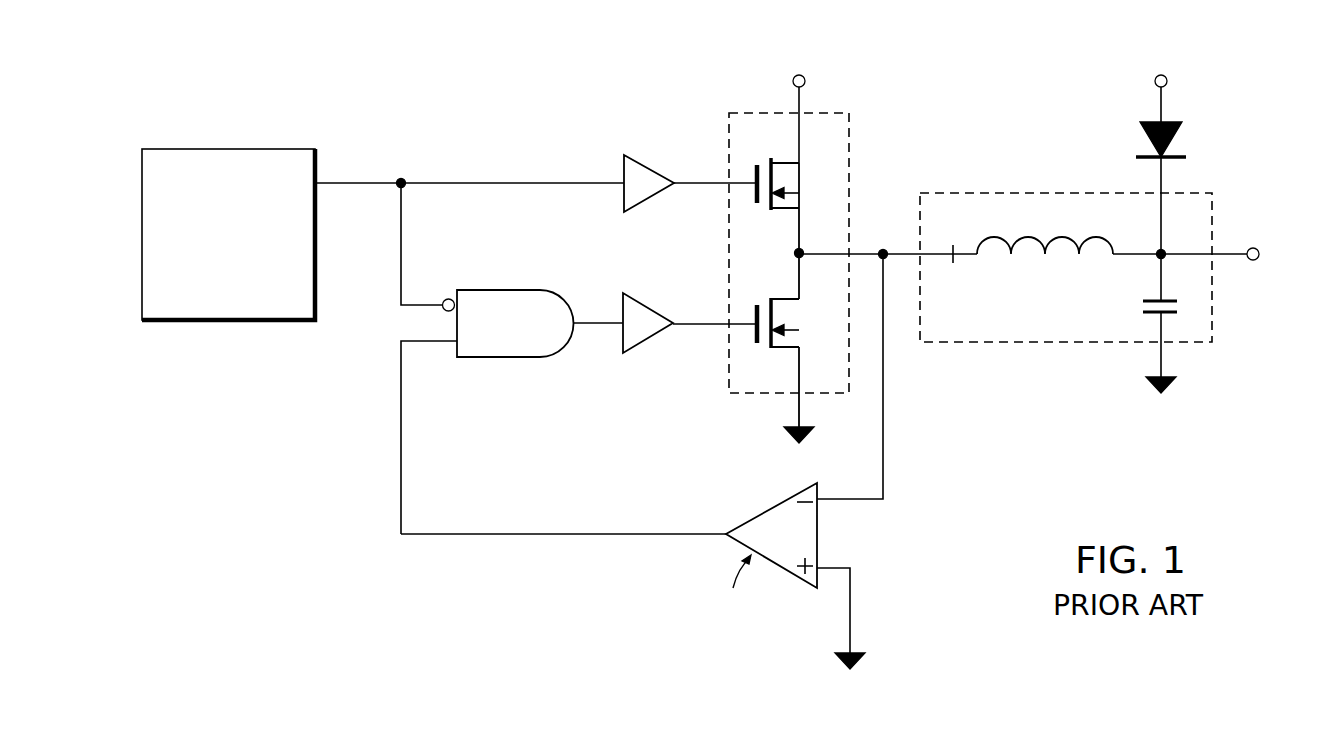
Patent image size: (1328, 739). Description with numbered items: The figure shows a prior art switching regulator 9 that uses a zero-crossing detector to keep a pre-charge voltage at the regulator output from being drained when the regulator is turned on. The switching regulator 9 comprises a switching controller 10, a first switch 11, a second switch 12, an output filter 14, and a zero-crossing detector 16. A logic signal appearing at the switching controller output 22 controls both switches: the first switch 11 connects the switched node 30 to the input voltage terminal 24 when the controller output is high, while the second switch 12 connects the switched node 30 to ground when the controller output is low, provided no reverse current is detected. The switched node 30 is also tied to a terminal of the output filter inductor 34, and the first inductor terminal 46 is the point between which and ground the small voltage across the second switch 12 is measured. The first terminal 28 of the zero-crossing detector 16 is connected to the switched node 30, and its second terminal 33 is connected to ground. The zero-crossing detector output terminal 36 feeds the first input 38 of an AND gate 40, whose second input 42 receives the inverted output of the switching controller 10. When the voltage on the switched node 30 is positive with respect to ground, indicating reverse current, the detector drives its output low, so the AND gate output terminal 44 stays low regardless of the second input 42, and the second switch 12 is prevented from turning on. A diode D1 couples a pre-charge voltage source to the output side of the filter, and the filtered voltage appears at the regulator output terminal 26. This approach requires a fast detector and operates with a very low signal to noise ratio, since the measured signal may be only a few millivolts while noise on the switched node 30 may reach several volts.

The switching regulator 9 is at (287, 92).
The switching controller 10 is at (216, 276).
The first switch 11 is at (756, 205).
The second switch 12 is at (756, 348).
The output filter 14 is at (1033, 327).
The zero-crossing detector 16 is at (765, 543).
The switching controller output 22 is at (469, 199).
The input voltage terminal 24 is at (814, 101).
The output voltage terminal 26 is at (1212, 242).
The first terminal of the zero-crossing detector 28 is at (850, 376).
The switched node 30 is at (886, 240).
The second terminal of the zero-crossing detector 33 is at (841, 604).
The output filter inductor 34 is at (1045, 231).
The zero-crossing detector output terminal 36 is at (563, 517).
The first input of the AND gate 38 is at (447, 432).
The AND gate 40 is at (501, 336).
The second input of the AND gate 42 is at (447, 251).
The AND gate output terminal 44 is at (578, 323).
The first inductor terminal 46 is at (952, 272).
The pre-charge diode D1 is at (1197, 146).